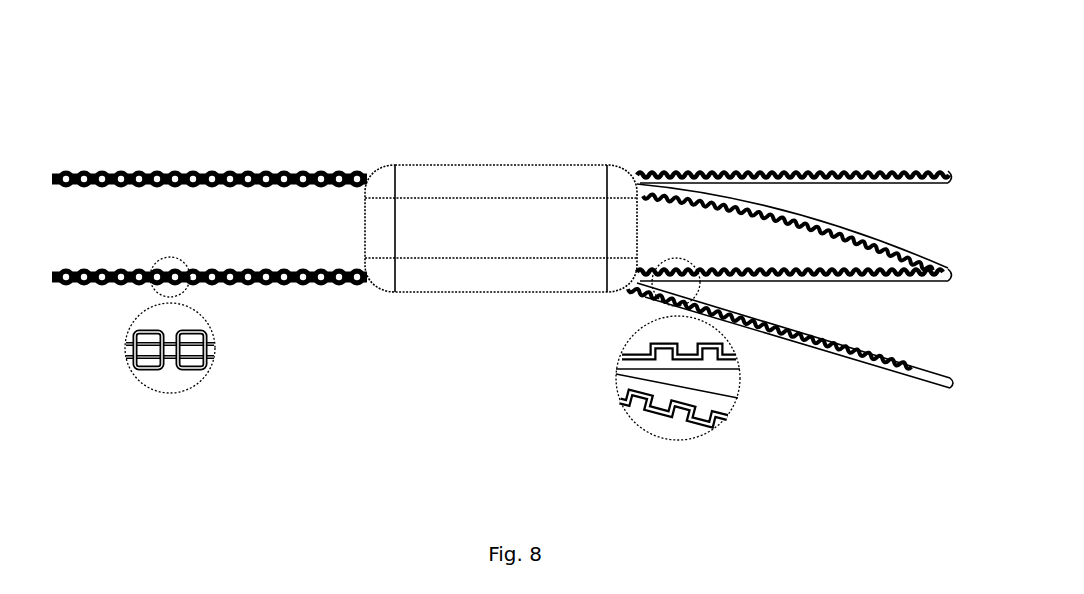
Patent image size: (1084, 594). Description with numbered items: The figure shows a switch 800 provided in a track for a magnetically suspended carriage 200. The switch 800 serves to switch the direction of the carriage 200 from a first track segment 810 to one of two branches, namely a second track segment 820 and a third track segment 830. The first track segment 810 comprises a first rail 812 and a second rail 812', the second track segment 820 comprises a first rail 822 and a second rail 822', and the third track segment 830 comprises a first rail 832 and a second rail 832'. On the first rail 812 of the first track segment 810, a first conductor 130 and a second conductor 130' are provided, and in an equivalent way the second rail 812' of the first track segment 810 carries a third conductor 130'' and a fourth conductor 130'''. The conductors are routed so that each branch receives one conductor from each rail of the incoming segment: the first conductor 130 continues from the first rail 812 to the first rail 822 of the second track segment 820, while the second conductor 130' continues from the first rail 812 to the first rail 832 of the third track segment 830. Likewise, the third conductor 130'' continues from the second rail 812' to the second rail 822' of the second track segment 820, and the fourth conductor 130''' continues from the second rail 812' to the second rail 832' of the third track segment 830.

The switch 800 is at (582, 111).
The first track segment 810 is at (275, 340).
The first rail 812 is at (209, 124).
The second rail 812' is at (209, 317).
The carriage 200 is at (422, 338).
The second conductor 130' is at (771, 119).
The first conductor 130 is at (788, 165).
The second track segment 820 is at (826, 139).
The first rail 832 is at (790, 168).
The first rail 822 is at (792, 164).
The third track segment 830 is at (827, 372).
The second rail 832' is at (775, 378).
The second rail 822' is at (795, 374).
The third conductor 130'' is at (618, 348).
The fourth conductor 130''' is at (609, 405).